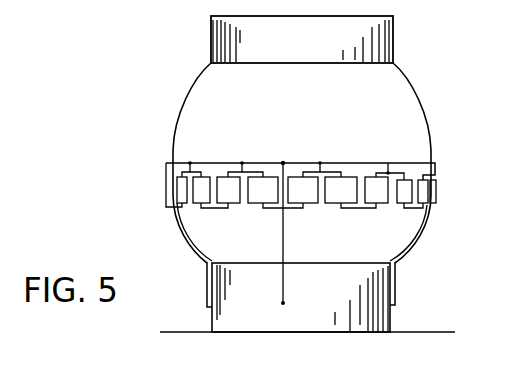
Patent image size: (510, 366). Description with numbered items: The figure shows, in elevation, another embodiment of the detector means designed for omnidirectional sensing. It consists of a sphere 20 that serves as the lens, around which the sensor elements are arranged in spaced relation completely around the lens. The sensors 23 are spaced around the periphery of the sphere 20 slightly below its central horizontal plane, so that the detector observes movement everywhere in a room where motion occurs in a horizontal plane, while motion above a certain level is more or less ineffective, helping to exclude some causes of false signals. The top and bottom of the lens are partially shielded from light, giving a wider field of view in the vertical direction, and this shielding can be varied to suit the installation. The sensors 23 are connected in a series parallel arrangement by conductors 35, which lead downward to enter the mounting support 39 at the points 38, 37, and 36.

The sphere 20 is at (368, 97).
The sensors 23 is at (383, 208).
The conductors 35 is at (348, 208).
The entry point of conductors into mounting support 36 is at (395, 303).
The entry point of conductors into mounting support 37 is at (283, 299).
The entry point of conductors into mounting support 38 is at (207, 283).
The mounting support 39 is at (251, 316).